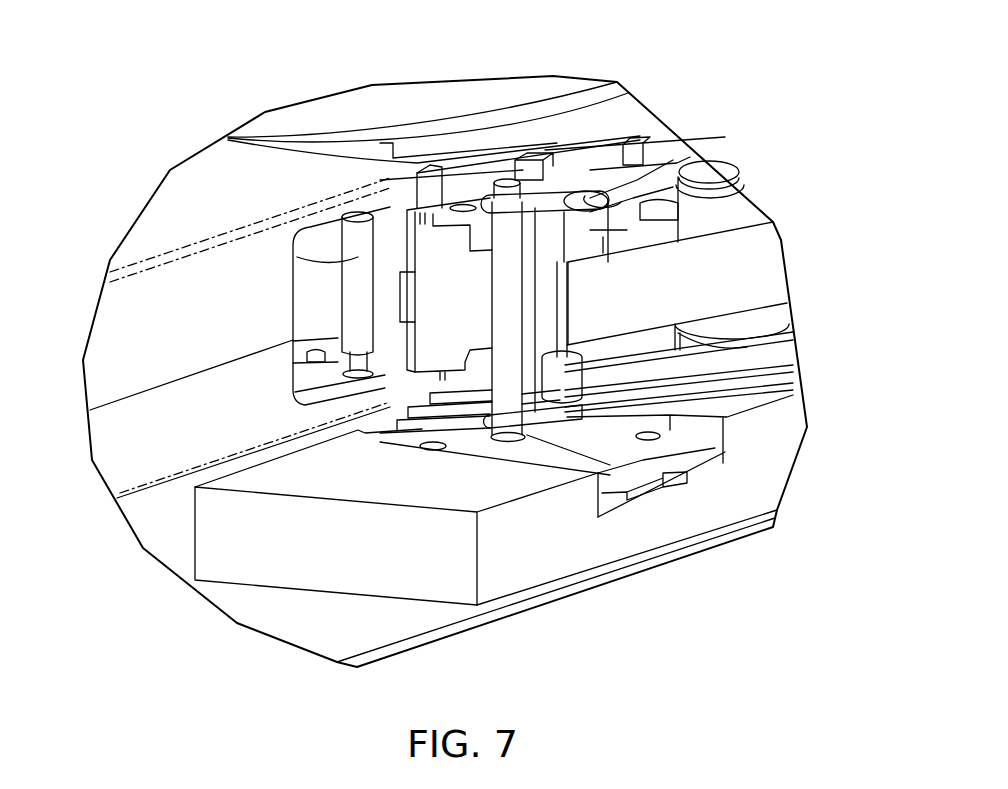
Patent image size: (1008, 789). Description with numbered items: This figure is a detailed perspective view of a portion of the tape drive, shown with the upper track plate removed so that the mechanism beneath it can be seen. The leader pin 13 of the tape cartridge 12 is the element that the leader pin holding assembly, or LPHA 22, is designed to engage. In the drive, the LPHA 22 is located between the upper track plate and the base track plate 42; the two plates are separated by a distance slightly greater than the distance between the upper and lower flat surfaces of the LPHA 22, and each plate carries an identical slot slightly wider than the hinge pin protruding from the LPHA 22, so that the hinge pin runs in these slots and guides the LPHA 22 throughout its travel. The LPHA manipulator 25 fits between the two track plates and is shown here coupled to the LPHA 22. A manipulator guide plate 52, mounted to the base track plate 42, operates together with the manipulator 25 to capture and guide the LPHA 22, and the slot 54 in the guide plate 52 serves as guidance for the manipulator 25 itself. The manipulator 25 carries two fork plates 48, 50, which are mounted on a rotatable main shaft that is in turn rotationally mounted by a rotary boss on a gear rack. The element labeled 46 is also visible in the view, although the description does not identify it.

The tape cartridge 12 is at (183, 217).
The leader pin 13 is at (290, 258).
The LPHA 22 is at (440, 317).
The LPHA manipulator 25 is at (505, 297).
The base track plate 42 is at (770, 443).
The guide rail 46 is at (742, 397).
The fork plate 48 is at (540, 420).
The fork plate 50 is at (565, 235).
The manipulator guide plate 52 is at (613, 452).
The slot 54 is at (400, 438).